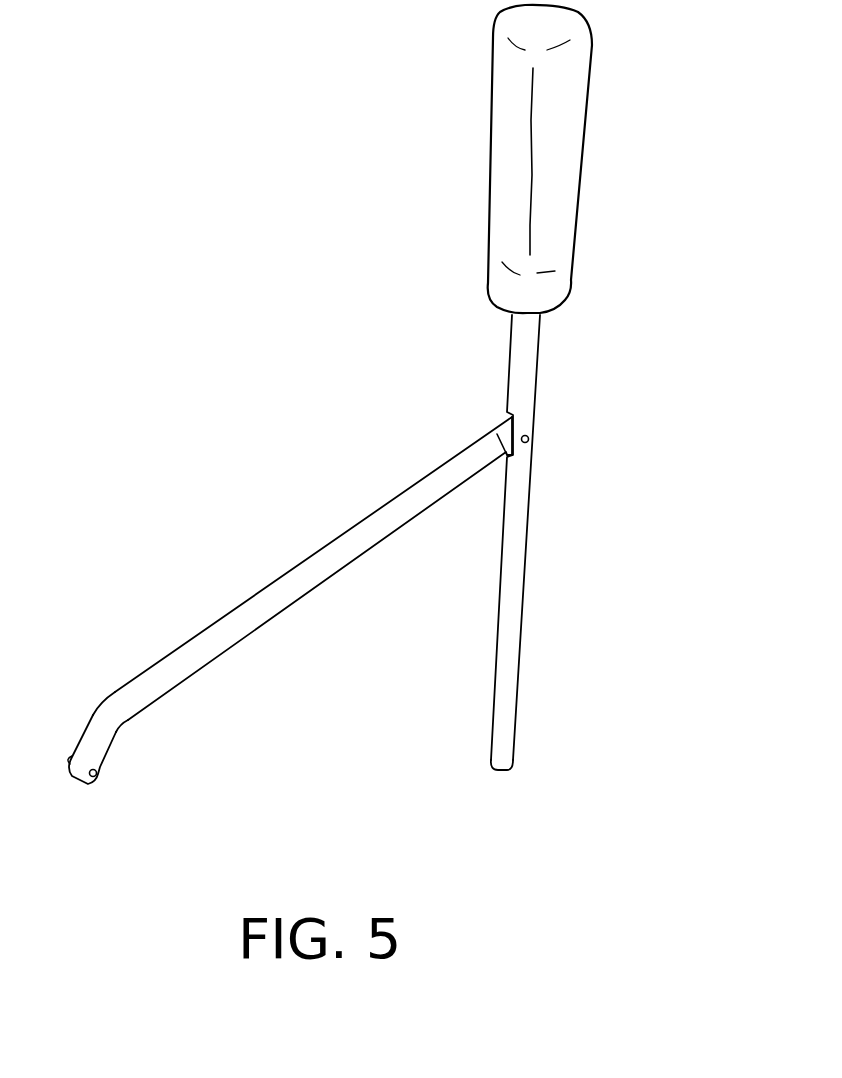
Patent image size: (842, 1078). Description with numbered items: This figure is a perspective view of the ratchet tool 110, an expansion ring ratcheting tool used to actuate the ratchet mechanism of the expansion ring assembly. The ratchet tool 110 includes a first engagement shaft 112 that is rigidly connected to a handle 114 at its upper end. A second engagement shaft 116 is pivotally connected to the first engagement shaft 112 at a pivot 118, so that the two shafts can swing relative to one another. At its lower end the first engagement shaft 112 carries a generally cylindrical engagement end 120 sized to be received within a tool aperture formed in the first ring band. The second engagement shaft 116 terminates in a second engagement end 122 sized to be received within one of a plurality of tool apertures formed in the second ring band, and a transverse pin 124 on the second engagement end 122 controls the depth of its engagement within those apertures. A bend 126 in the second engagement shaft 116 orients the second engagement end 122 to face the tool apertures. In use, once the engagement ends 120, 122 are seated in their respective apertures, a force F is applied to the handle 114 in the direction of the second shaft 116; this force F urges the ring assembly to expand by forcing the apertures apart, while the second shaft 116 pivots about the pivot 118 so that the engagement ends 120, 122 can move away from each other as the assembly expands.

The ratchet tool 110 is at (211, 238).
The first engagement shaft 112 is at (518, 578).
The handle 114 is at (568, 148).
The second engagement shaft 116 is at (298, 592).
The pivot 118 is at (531, 441).
The engagement end 120 is at (503, 770).
The second engagement end 122 is at (73, 777).
The transverse pin 124 is at (97, 772).
The bend 126 is at (100, 718).
The force F is at (637, 52).